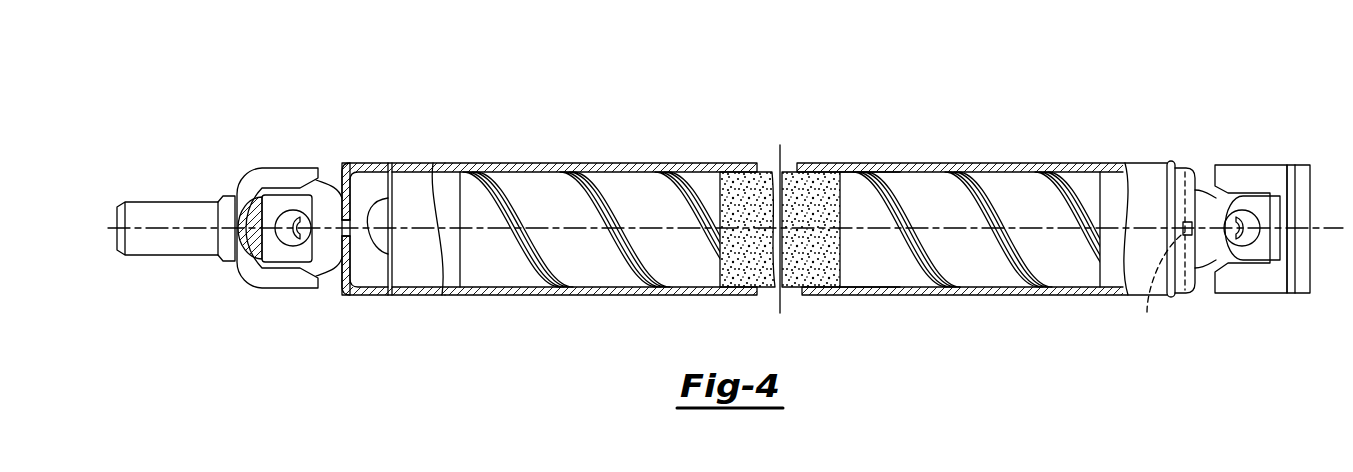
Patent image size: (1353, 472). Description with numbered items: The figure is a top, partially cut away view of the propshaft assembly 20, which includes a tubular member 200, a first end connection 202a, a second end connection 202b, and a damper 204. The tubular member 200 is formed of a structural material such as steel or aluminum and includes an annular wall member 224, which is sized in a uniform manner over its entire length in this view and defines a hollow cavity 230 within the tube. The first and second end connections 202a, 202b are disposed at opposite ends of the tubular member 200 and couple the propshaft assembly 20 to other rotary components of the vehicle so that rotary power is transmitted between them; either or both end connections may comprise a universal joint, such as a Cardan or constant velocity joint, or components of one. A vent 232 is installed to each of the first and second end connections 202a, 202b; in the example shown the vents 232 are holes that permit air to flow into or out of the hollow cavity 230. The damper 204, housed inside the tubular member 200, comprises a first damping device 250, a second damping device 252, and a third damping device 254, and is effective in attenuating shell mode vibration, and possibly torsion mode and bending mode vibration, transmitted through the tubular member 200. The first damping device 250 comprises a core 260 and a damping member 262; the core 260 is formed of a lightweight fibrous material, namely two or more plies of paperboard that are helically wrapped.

The propshaft assembly 20 is at (646, 90).
The tubular member 200 is at (560, 301).
The first end connection 202a is at (342, 164).
The second end connection 202b is at (1184, 170).
The damper 204 is at (826, 187).
The annular wall member 224 is at (389, 163).
The hollow cavity 230 is at (1124, 186).
The vent 232 is at (356, 232).
The first damping device 250 is at (703, 186).
The second damping device 252 is at (787, 172).
The third damping device 254 is at (870, 193).
The core 260 is at (480, 276).
The damping member 262 is at (518, 171).